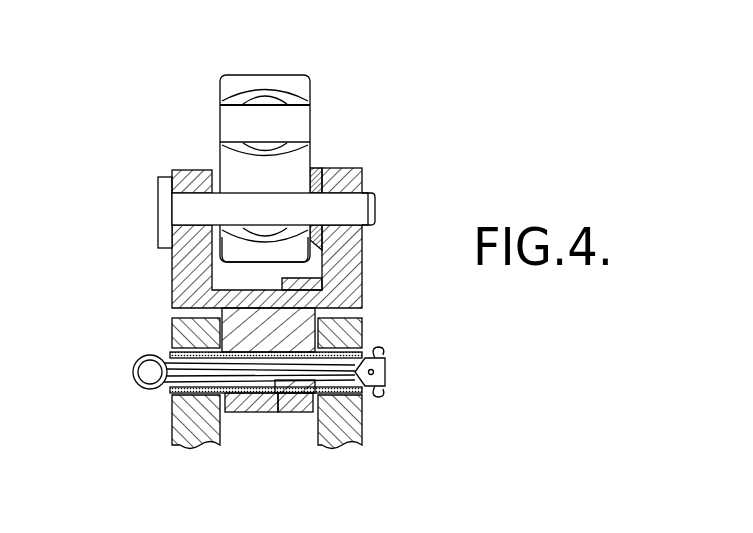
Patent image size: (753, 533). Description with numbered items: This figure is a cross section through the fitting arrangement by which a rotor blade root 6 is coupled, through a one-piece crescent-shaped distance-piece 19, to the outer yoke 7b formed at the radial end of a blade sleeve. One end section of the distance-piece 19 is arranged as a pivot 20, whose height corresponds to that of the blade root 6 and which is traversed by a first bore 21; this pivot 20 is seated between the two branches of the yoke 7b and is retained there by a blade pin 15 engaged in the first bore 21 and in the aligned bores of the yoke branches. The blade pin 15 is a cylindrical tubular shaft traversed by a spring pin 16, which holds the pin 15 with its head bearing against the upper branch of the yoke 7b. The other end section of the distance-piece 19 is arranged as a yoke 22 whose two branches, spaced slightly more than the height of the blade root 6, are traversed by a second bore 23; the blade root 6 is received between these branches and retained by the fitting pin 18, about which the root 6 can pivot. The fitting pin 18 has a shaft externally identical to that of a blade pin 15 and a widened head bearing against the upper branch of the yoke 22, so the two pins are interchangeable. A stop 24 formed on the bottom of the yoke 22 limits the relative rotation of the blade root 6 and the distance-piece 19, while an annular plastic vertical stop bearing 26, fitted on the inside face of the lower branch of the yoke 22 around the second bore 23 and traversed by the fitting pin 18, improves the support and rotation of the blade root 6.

The blade root 6 is at (263, 82).
The yoke 22 is at (186, 170).
The vertical stop bearing 26 is at (313, 167).
The second bore 23 is at (353, 204).
The fitting pin 18 is at (346, 213).
The distance-piece 19 is at (172, 276).
The stop 24 is at (362, 280).
The spring pin 16 is at (134, 362).
The yoke 7b is at (190, 427).
The pivot 20 is at (255, 398).
The first bore 21 is at (303, 393).
The blade pin 15 is at (278, 412).